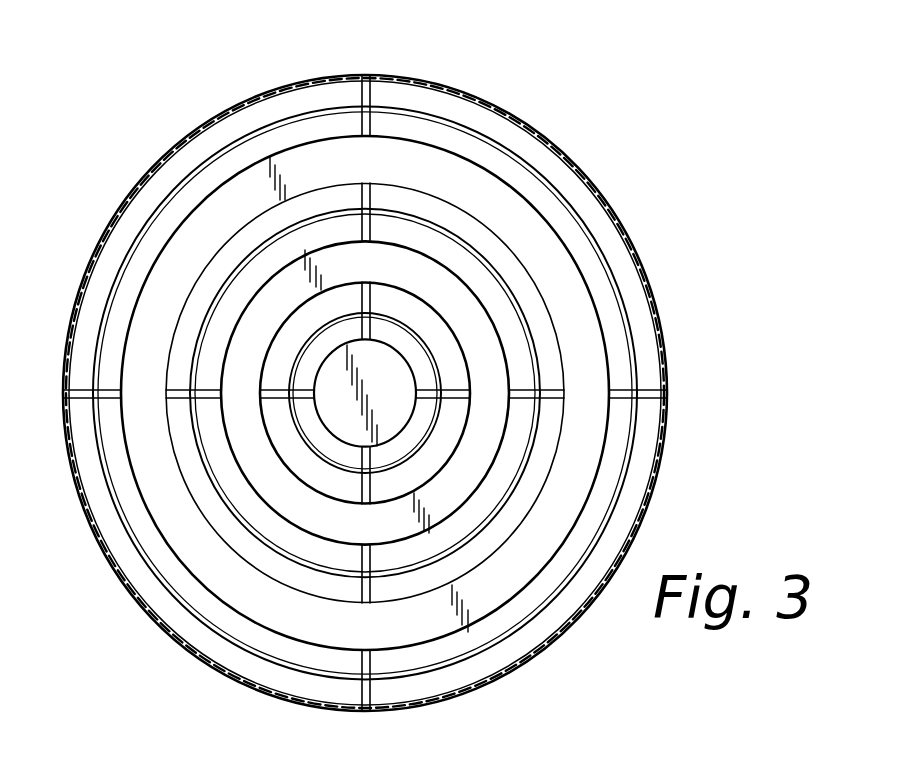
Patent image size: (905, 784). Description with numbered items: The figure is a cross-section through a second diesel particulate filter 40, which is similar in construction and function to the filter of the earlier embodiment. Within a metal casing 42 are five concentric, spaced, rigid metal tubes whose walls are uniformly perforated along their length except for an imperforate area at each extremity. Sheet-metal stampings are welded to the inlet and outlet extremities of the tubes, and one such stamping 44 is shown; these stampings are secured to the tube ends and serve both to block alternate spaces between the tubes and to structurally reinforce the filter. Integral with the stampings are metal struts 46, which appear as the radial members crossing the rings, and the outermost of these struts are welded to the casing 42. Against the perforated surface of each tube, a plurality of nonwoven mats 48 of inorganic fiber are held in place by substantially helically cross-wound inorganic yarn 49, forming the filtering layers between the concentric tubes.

The diesel particulate filter 40 is at (620, 108).
The metal casing 42 is at (612, 207).
The sheet-metal stamping 44 is at (485, 167).
The metal struts 46 is at (372, 302).
The nonwoven mats 48 is at (517, 342).
The inorganic yarn 49 is at (515, 293).